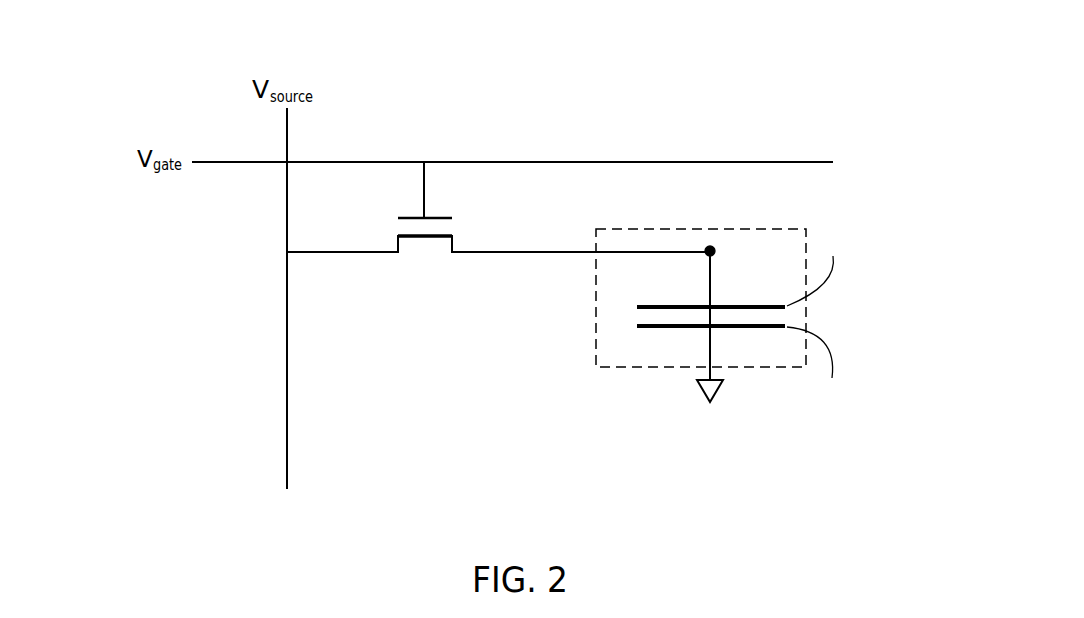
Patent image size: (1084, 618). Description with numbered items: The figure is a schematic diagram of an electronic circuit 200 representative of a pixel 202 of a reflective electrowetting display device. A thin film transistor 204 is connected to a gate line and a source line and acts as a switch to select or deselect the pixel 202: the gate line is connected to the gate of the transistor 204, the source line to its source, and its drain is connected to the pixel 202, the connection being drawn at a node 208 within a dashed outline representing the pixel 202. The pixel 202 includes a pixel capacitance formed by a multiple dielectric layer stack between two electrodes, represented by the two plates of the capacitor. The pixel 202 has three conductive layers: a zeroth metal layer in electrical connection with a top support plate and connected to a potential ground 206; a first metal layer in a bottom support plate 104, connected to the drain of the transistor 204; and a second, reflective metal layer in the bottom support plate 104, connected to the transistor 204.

The electronic circuit 200 is at (750, 50).
The pixel 202 is at (597, 287).
The TFT 204 is at (425, 255).
The potential ground 206 is at (704, 392).
The node 208 is at (712, 249).
The bottom support plate 104 is at (783, 315).